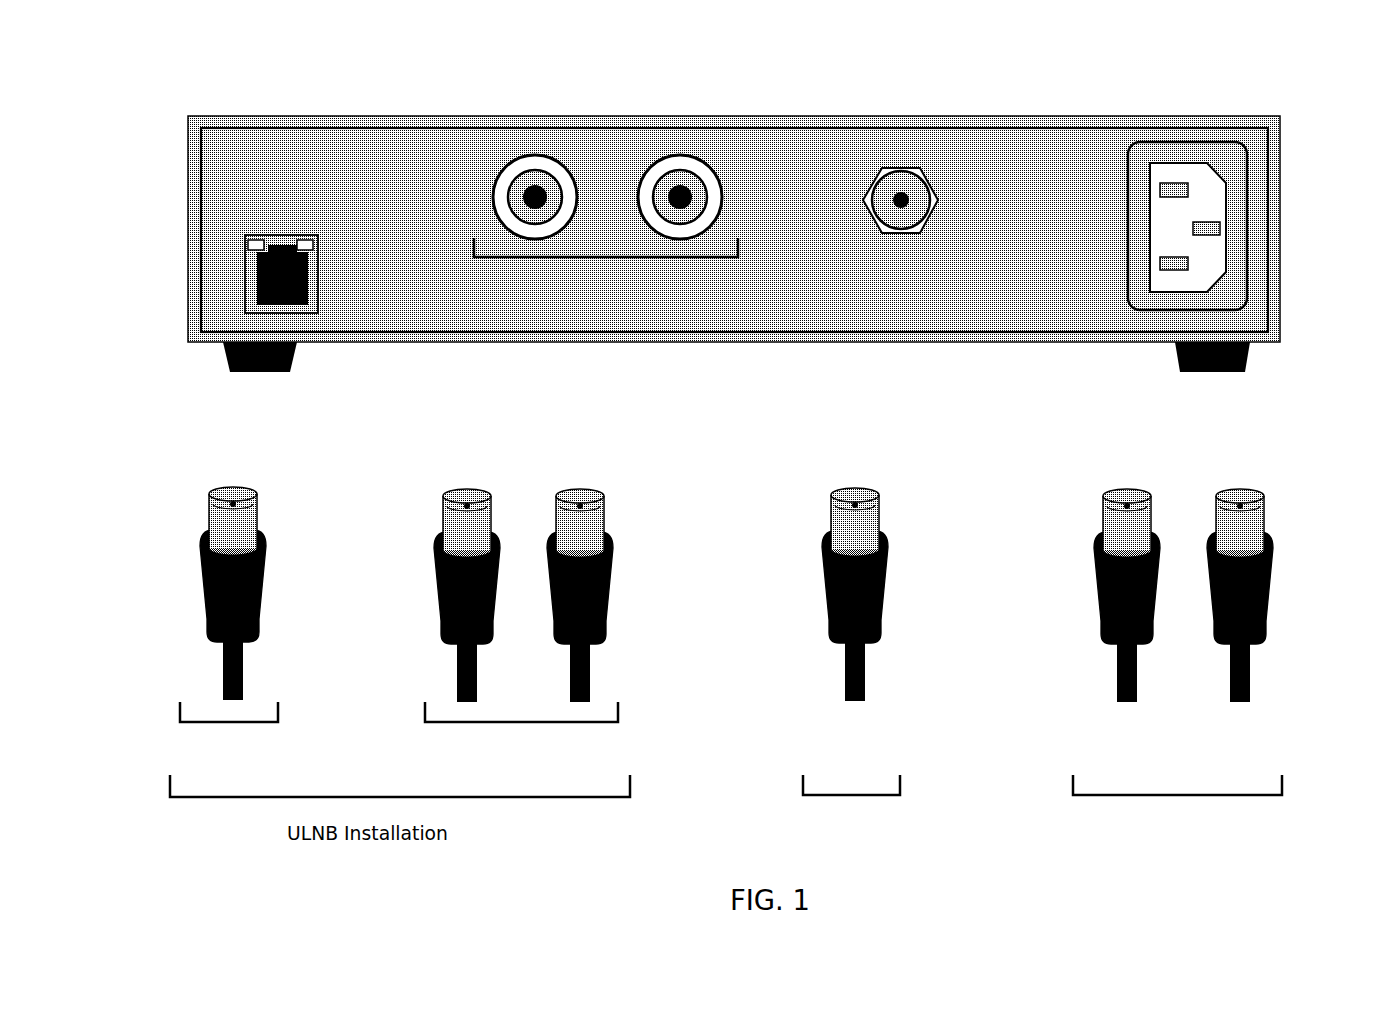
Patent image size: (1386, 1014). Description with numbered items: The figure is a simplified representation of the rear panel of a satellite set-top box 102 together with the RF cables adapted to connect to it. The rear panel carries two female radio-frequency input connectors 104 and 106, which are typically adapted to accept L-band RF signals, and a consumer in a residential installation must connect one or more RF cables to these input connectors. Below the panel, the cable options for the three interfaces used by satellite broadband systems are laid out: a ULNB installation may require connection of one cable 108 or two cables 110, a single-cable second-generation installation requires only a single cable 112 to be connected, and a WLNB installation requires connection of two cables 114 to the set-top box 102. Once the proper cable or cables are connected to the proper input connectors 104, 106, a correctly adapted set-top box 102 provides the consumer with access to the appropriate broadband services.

The satellite set-top box 102 is at (278, 116).
The female RF input connector 104 is at (535, 155).
The female RF input connector 106 is at (681, 156).
The one cable (ULNB installation) 108 is at (179, 710).
The two cables (ULNB installation) 110 is at (622, 711).
The single cable (single-cable second-generation installation) 112 is at (903, 783).
The two cables (WLNB installation) 114 is at (1283, 783).